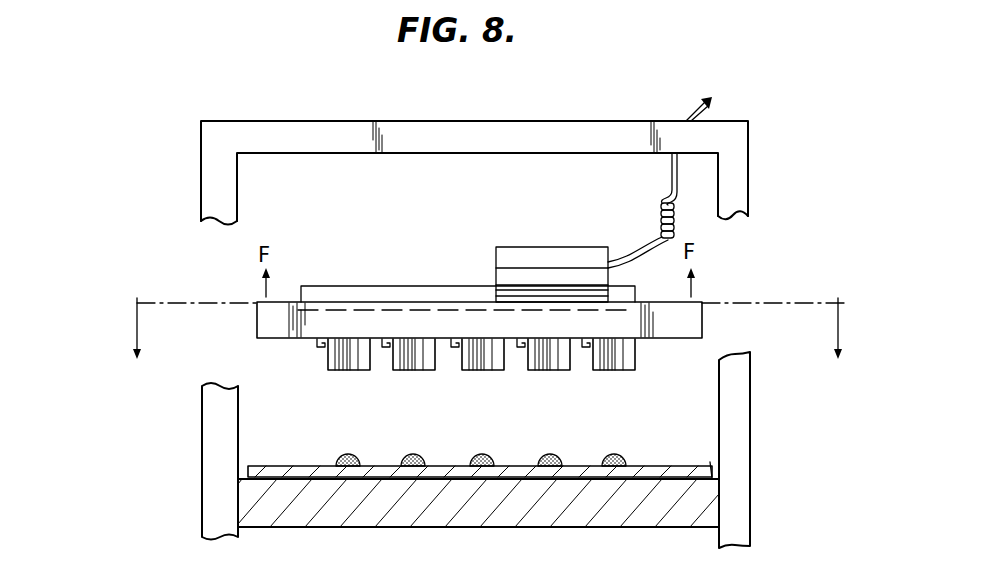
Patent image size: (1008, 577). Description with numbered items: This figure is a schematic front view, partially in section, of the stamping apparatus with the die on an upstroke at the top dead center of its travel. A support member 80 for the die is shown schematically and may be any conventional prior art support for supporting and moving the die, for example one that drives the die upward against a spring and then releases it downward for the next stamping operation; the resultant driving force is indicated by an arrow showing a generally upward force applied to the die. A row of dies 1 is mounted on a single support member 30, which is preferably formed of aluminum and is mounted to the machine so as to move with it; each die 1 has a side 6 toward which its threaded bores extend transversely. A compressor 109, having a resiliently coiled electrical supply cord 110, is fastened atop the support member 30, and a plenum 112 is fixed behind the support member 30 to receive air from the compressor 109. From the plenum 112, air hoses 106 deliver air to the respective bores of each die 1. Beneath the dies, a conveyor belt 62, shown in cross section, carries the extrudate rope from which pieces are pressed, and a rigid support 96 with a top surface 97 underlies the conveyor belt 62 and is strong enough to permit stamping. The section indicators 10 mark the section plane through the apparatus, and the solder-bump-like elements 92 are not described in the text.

The die 1 is at (344, 374).
The side of the die 6 is at (324, 362).
The section line 10 is at (491, 344).
The support member 30 is at (415, 314).
The conveyor belt 62 is at (272, 465).
The support member for the die 80 is at (596, 123).
The solder bump 92 is at (411, 450).
The support 96 is at (476, 510).
The top surface 97 is at (712, 466).
The air hoses 106 is at (318, 345).
The compressor 109 is at (600, 265).
The resiliently coiled electrical supply cord 110 is at (688, 112).
The plenum 112 is at (360, 284).